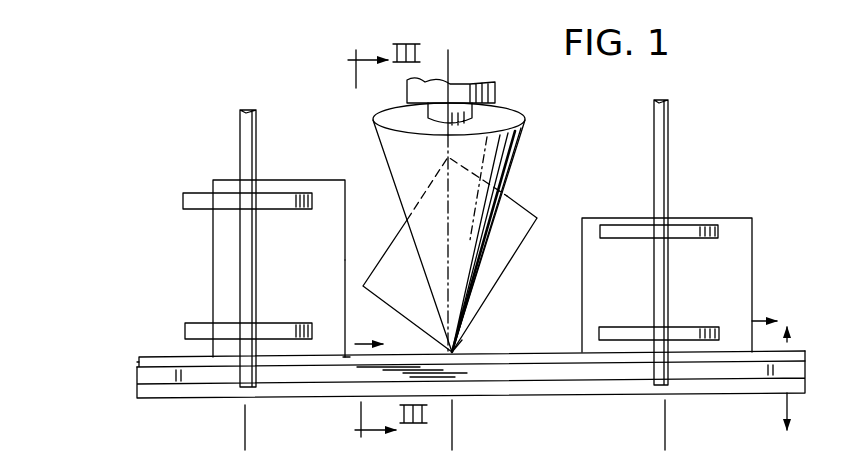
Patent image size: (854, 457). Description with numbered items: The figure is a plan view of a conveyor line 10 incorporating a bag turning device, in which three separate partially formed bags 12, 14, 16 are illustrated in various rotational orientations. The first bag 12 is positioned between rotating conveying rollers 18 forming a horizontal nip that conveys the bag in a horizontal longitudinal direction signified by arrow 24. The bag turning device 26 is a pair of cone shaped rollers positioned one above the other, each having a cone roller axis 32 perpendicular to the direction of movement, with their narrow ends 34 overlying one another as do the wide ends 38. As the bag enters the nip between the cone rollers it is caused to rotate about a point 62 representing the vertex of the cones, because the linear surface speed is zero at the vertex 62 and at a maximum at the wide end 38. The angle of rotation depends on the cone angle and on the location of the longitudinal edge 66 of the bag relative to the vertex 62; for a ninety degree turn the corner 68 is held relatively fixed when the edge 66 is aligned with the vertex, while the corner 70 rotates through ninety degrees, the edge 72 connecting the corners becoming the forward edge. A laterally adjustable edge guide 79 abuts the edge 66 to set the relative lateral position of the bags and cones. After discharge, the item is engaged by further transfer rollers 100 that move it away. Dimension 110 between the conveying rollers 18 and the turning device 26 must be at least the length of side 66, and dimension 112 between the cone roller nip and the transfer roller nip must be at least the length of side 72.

The conveyor line 10 is at (220, 405).
The first bag 12 is at (312, 187).
The second bag 14 is at (527, 233).
The third bag 16 is at (740, 228).
The conveying roller 18 is at (186, 200).
The arrow 24 is at (420, 350).
The bag turning device 26 is at (505, 92).
The cone roller axis 32 is at (450, 73).
The narrow end 34 is at (468, 397).
The wide end 38 is at (522, 135).
The vertex 62 is at (480, 323).
The longitudinal edge 66 is at (277, 356).
The corner 68 is at (347, 360).
The corner 70 is at (343, 182).
The edge 72 is at (348, 277).
The edge guide 79 is at (139, 360).
The transfer roller 100 is at (719, 333).
The dimension 110 is at (452, 442).
The dimension 112 is at (665, 442).